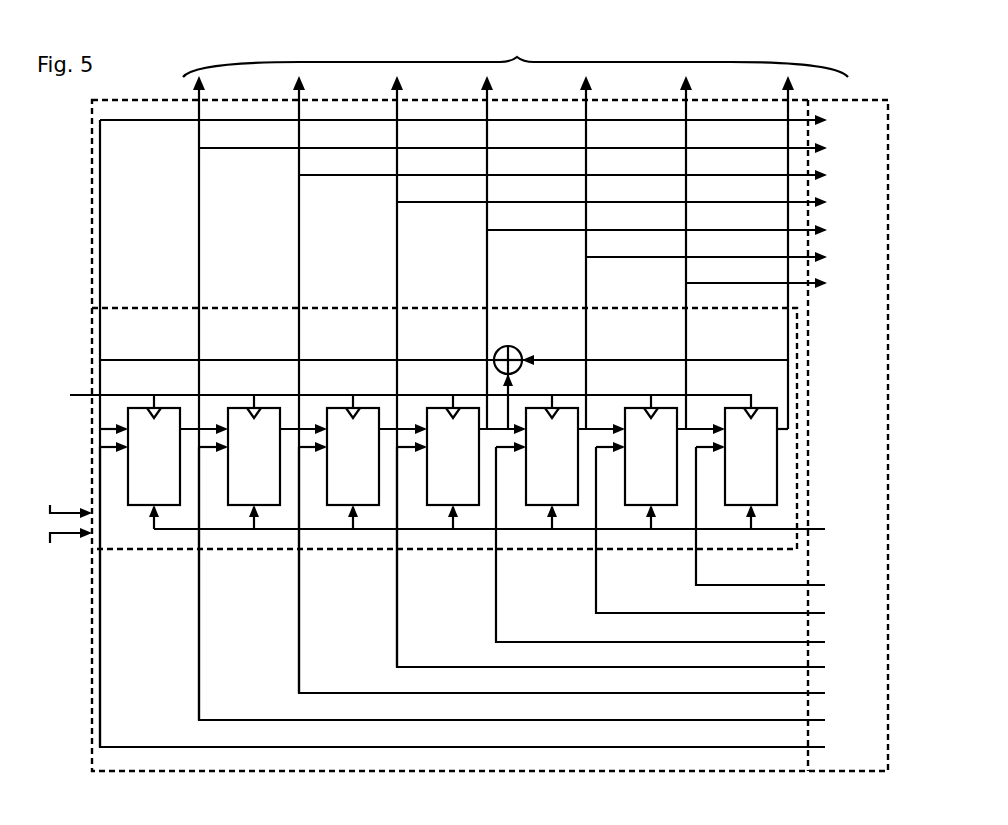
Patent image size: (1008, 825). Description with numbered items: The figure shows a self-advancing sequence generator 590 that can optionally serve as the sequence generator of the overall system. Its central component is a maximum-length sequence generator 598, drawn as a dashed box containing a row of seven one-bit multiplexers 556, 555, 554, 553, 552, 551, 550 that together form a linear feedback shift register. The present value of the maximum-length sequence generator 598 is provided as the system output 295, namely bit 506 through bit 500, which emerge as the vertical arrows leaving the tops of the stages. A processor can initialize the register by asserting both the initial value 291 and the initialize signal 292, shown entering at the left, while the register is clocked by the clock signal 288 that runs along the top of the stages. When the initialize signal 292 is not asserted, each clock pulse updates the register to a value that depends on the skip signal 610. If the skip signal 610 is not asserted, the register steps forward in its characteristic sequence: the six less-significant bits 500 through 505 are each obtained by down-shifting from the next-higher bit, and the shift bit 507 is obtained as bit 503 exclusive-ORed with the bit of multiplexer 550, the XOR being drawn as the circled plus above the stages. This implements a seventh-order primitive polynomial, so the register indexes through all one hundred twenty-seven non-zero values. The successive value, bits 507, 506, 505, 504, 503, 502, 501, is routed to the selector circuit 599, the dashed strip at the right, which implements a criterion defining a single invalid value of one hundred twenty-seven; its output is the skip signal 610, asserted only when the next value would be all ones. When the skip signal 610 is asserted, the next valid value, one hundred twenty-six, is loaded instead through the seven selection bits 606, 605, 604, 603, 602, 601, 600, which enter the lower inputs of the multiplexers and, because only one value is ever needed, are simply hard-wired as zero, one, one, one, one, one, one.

The system output 295 is at (515, 55).
The self-advancing sequence generator 590 is at (874, 88).
The selector circuit 599 is at (865, 369).
The maximum-length sequence generator 598 is at (762, 342).
The bit 500 is at (811, 251).
The bit 501 is at (776, 251).
The bit 502 is at (703, 251).
The bit 503 is at (654, 251).
The bit 504 is at (609, 370).
The bit 505 is at (560, 383).
The bit 506 is at (510, 397).
The shift bit 507 is at (486, 428).
The clock signal 288 is at (391, 395).
The initial value 291 is at (62, 497).
The initialize signal 292 is at (62, 551).
The multiplexer 550 is at (770, 467).
The multiplexer 551 is at (670, 467).
The multiplexer 552 is at (571, 467).
The multiplexer 553 is at (472, 467).
The multiplexer 554 is at (372, 467).
The multiplexer 555 is at (273, 467).
The multiplexer 556 is at (173, 467).
The skip signal 610 is at (511, 529).
The selection signal bit 600 is at (782, 522).
The selection signal bit 601 is at (732, 536).
The selection signal bit 602 is at (682, 550).
The selection signal bit 603 is at (632, 563).
The selection signal bit 604 is at (583, 576).
The selection signal bit 605 is at (533, 590).
The selection signal bit 606 is at (484, 603).